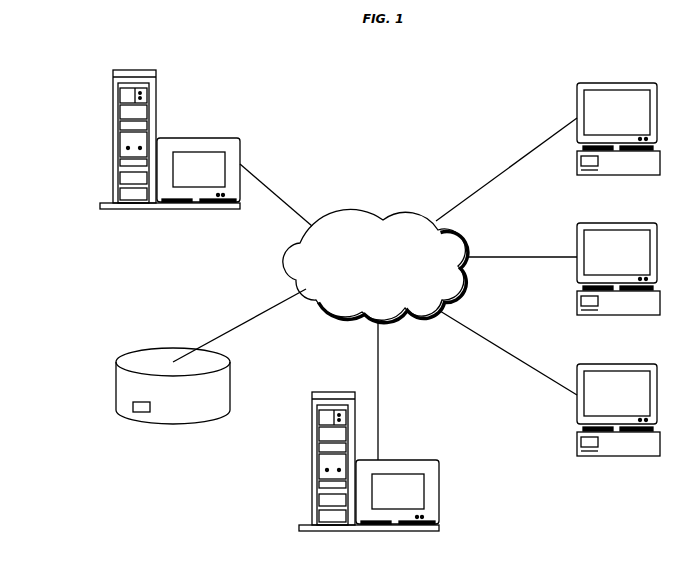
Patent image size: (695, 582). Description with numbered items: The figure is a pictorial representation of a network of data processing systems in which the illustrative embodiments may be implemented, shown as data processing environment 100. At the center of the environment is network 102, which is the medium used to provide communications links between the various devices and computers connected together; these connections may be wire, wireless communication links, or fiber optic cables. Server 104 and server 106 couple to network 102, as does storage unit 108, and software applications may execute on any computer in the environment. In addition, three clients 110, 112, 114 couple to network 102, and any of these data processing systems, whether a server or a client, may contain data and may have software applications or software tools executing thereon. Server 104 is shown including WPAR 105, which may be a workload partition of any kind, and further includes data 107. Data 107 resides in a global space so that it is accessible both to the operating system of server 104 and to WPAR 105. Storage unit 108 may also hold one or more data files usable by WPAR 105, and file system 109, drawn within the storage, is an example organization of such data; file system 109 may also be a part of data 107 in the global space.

The data processing environment 100 is at (66, 52).
The network 102 is at (390, 281).
The server 104 is at (132, 150).
The WPAR 105 is at (193, 150).
The server 106 is at (369, 471).
The data 107 is at (128, 176).
The storage unit 108 is at (185, 414).
The file system 109 is at (133, 406).
The client 110 is at (618, 279).
The client 112 is at (618, 420).
The client 114 is at (655, 194).